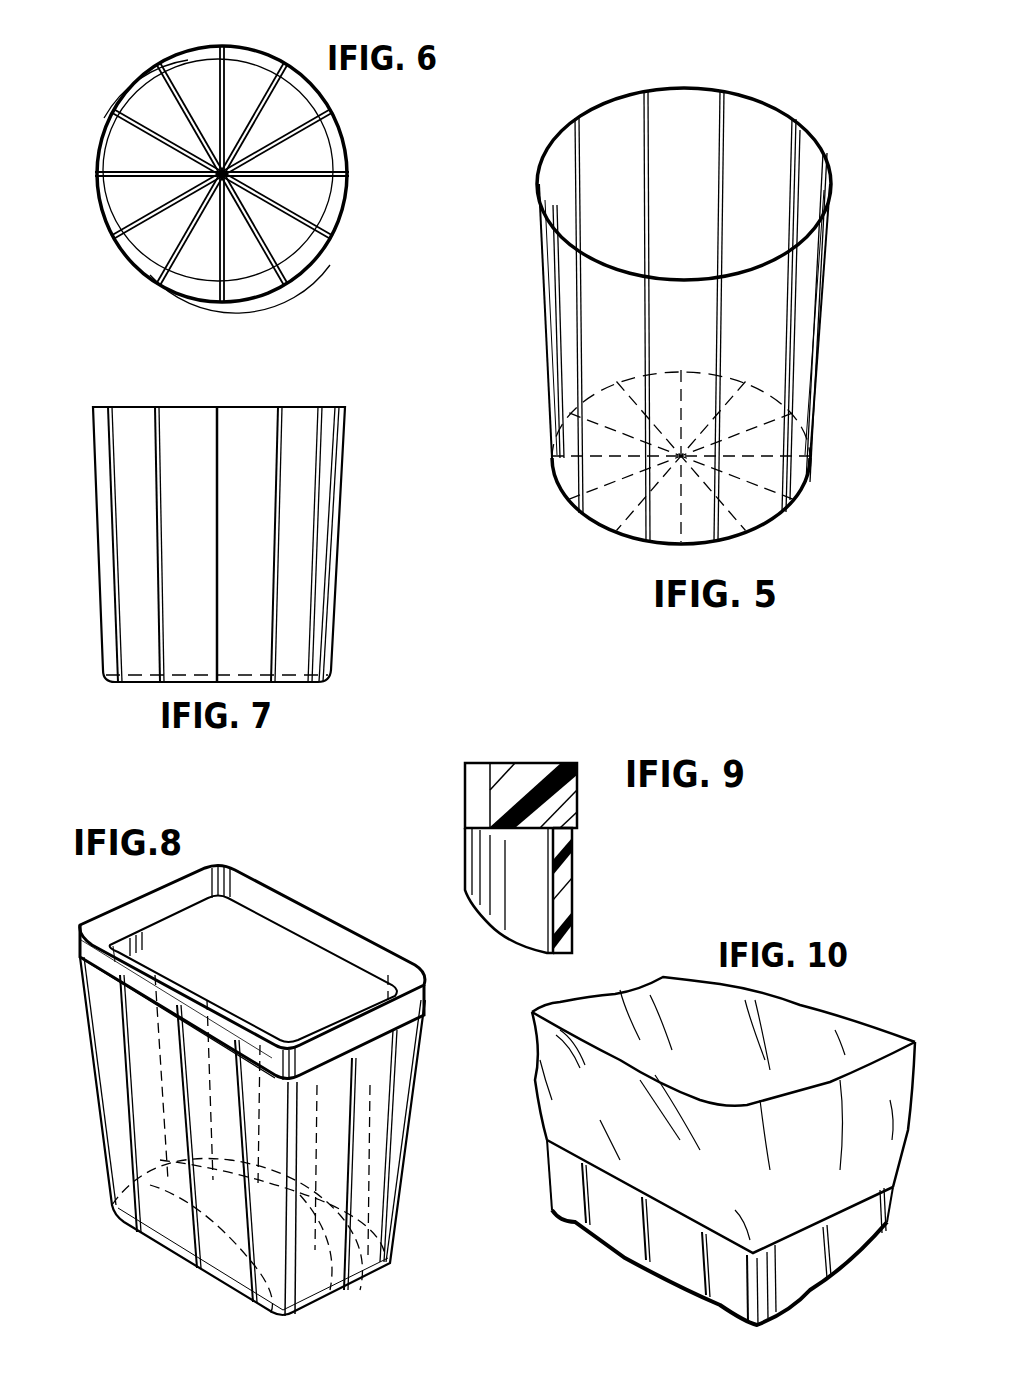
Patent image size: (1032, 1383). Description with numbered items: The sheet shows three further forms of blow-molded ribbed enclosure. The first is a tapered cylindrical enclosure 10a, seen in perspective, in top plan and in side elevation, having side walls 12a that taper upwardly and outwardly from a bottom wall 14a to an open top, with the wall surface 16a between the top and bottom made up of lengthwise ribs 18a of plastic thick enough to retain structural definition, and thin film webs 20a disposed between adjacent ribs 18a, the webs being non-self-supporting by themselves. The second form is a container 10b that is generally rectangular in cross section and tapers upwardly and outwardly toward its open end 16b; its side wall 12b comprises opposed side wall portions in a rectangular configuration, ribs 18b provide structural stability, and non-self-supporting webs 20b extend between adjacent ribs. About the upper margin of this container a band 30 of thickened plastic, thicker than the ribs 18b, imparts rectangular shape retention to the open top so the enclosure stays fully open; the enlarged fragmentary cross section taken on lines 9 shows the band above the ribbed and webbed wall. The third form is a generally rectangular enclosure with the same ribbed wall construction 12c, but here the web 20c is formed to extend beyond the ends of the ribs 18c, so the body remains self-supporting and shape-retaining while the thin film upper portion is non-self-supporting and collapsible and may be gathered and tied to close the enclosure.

In FIG. 5, the enclosure 10a is at (657, 311).
In FIG. 6, the side walls 12a is at (128, 88).
In FIG. 5, the side walls 12a is at (548, 272).
In FIG. 7, the side walls 12a is at (258, 565).
In FIG. 6, the bottom wall 14a is at (264, 101).
In FIG. 5, the bottom wall 14a is at (698, 522).
In FIG. 7, the bottom wall 14a is at (243, 676).
In FIG. 5, the wall panel 16a is at (596, 175).
In FIG. 6, the ribs 18a is at (215, 50).
In FIG. 5, the ribs 18a is at (642, 150).
In FIG. 6, the webs 20a is at (253, 56).
In FIG. 5, the webs 20a is at (660, 102).
In FIG. 8, the container 10b is at (231, 1086).
In FIG. 9, the side wall 12b is at (462, 855).
In FIG. 8, the open end 16b is at (165, 930).
In FIG. 8, the ribs 18b is at (118, 1060).
In FIG. 9, the ribs 18b is at (574, 860).
In FIG. 8, the webs 20b is at (285, 940).
In FIG. 9, the webs 20b is at (560, 908).
In FIG. 8, the band 30 is at (80, 943).
In FIG. 9, the band 30 is at (502, 764).
In FIG. 8, the section lines 9— 9 is at (338, 995).
In FIG. 10, the side wall 12c is at (562, 1188).
In FIG. 10, the ribs 18c is at (577, 1223).
In FIG. 10, the web 20c is at (627, 1237).